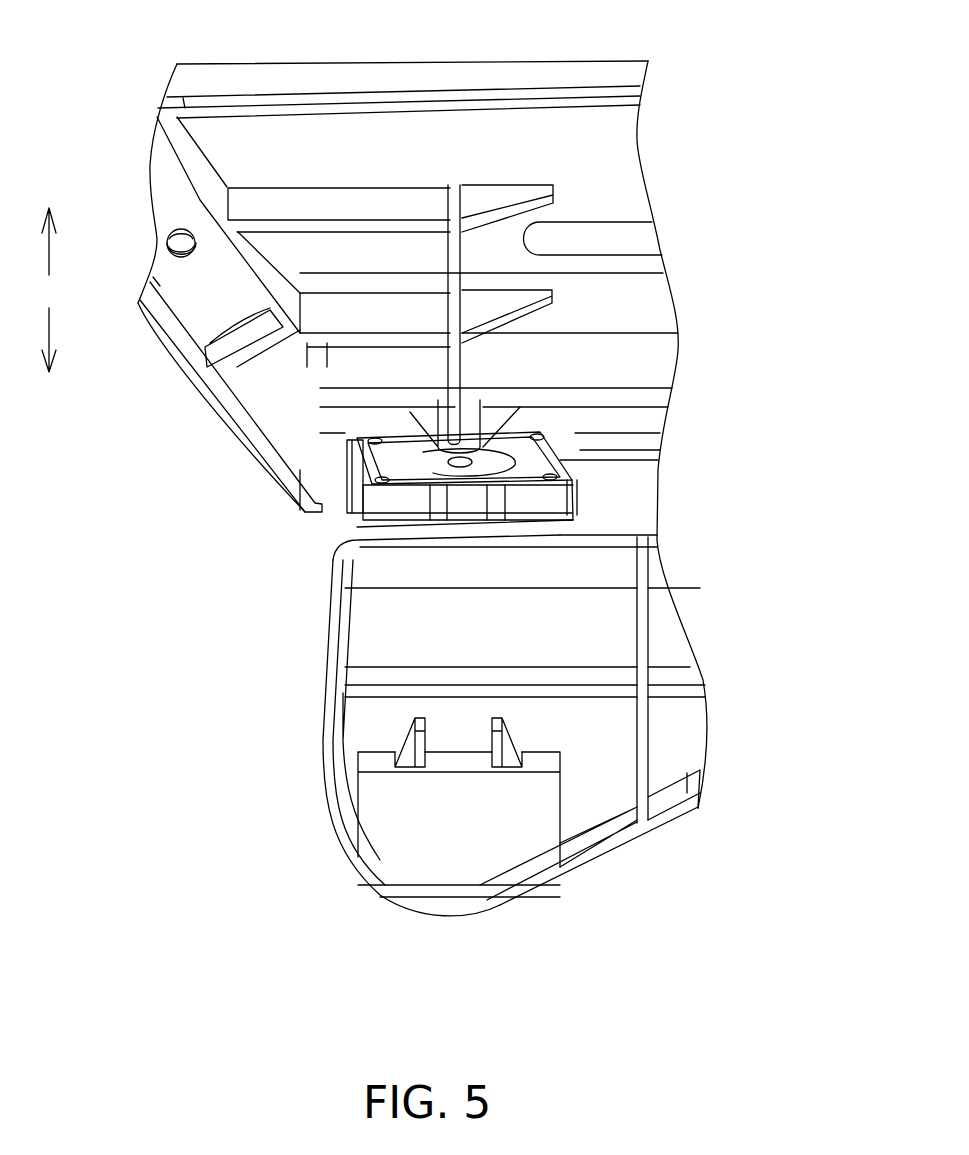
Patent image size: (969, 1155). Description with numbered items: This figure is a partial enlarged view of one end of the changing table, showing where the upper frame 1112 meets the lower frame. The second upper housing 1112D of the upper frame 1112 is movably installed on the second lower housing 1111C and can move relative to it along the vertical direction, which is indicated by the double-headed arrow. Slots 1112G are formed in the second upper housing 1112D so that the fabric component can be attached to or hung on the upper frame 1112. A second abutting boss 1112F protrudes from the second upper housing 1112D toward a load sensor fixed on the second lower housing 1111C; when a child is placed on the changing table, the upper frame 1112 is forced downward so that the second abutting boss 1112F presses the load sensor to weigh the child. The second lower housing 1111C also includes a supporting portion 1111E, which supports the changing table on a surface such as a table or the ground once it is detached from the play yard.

The upper frame 1112 is at (540, 460).
The second upper housing 1112D is at (140, 404).
The second abutting boss 1112F is at (470, 417).
The slot 1112G is at (604, 210).
The second lower housing 1111C is at (417, 718).
The supporting portion 1111E is at (340, 837).